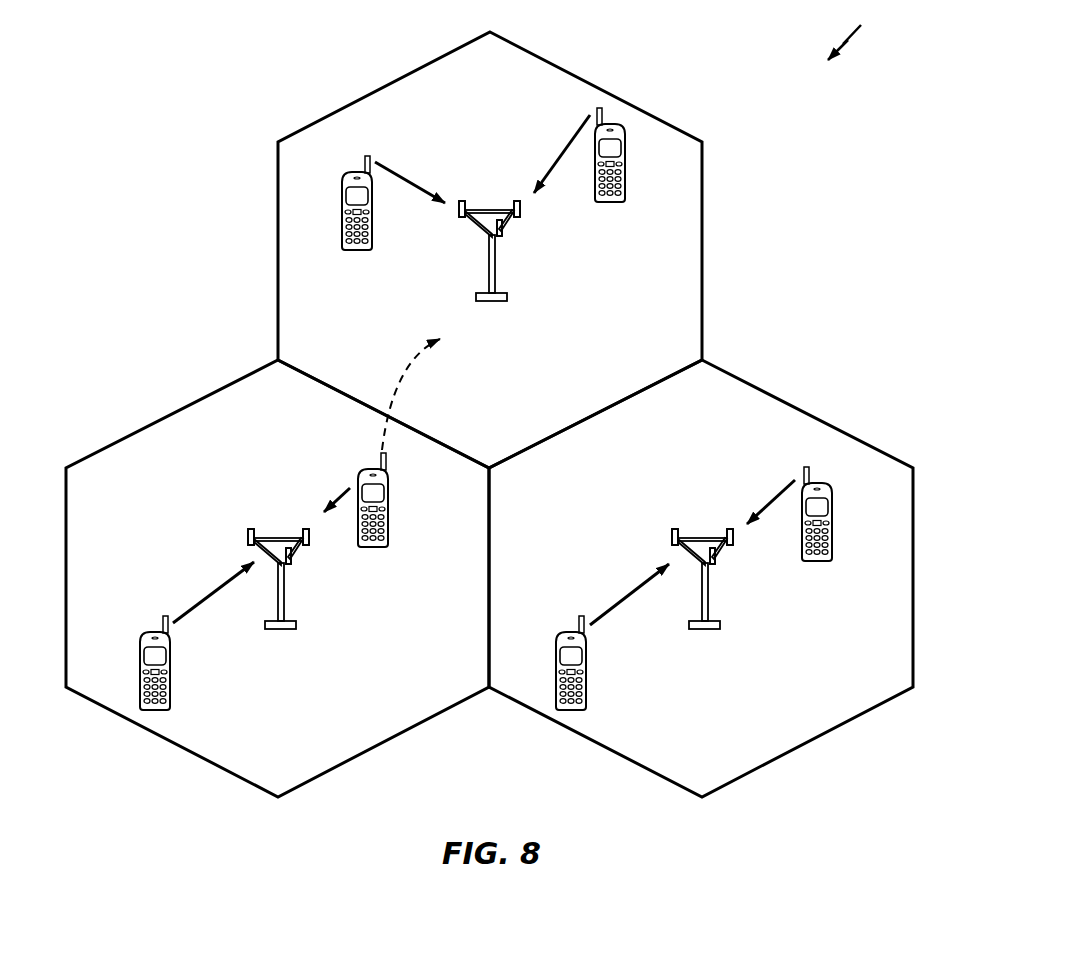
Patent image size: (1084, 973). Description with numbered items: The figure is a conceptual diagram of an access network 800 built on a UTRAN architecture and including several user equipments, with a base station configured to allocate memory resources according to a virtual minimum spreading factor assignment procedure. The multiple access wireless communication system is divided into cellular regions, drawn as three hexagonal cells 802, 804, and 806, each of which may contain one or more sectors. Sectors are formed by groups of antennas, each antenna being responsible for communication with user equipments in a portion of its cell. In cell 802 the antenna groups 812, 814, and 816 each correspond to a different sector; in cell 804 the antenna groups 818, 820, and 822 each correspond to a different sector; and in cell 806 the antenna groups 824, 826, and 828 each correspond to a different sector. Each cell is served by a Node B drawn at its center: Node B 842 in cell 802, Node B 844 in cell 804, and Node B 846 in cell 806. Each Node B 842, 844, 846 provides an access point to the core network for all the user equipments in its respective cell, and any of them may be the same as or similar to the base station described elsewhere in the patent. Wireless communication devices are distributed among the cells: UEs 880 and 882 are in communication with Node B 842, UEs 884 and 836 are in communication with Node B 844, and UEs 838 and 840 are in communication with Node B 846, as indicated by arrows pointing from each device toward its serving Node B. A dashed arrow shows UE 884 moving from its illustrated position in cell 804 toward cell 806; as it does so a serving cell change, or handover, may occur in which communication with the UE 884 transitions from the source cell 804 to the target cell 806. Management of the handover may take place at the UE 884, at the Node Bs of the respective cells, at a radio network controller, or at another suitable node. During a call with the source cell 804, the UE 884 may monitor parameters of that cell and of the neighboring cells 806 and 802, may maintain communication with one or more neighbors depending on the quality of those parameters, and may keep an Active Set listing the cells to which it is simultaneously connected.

The access network 800 is at (862, 31).
The cell 802 is at (808, 412).
The cell 804 is at (148, 422).
The cell 806 is at (577, 73).
The antenna group 812 is at (672, 533).
The antenna group 814 is at (713, 564).
The antenna group 816 is at (733, 544).
The antenna group 818 is at (288, 564).
The antenna group 820 is at (307, 544).
The antenna group 822 is at (248, 533).
The antenna group 824 is at (460, 218).
The antenna group 826 is at (502, 238).
The antenna group 828 is at (521, 214).
The UE 836 is at (140, 656).
The UE 838 is at (357, 251).
The UE 840 is at (613, 203).
The Node B 842 is at (704, 537).
The Node B 844 is at (279, 537).
The Node B 846 is at (494, 206).
The access terminal 880 is at (832, 504).
The access terminal 882 is at (555, 656).
The UE 884 is at (388, 491).